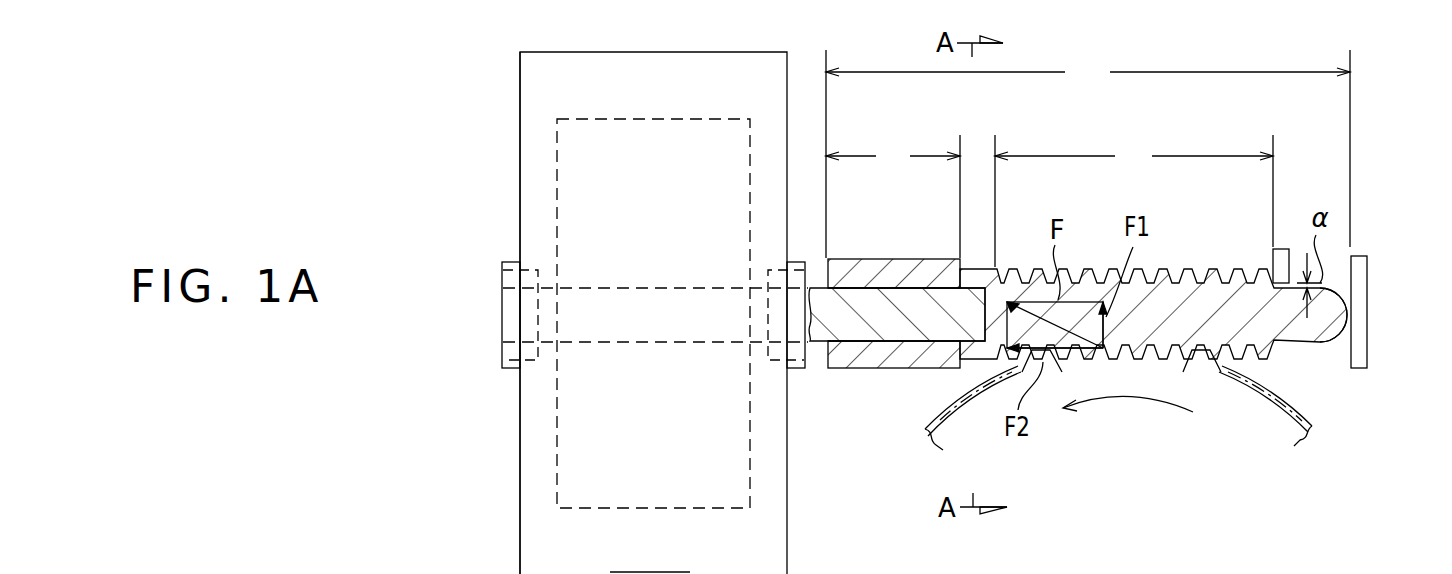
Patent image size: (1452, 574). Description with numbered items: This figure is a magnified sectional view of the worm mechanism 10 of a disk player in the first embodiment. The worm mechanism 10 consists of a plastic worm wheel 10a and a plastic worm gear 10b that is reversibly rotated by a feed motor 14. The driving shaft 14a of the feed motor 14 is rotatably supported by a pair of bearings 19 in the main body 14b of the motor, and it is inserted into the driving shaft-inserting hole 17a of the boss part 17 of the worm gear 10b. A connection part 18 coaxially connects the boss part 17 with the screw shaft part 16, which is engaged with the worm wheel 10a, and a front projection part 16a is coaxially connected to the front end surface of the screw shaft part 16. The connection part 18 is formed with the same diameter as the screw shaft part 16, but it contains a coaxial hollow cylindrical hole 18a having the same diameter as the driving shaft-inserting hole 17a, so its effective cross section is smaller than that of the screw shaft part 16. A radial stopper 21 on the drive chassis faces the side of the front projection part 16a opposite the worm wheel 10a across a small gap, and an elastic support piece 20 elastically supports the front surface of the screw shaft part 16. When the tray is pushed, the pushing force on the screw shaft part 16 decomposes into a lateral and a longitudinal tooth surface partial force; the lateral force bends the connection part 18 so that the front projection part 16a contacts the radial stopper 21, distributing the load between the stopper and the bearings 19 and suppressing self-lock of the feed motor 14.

The worm mechanism 10 is at (1389, 216).
The worm wheel 10a is at (1312, 395).
The worm gear 10b is at (1088, 148).
The feed motor 14 is at (511, 152).
The driving shaft 14a is at (890, 298).
The main body 14b is at (533, 208).
The screw shaft part 16 is at (1134, 201).
The front projection part 16a is at (1297, 335).
The boss part 17 is at (893, 154).
The driving shaft-inserting hole 17a is at (872, 343).
The connection part 18 is at (978, 155).
The hollow cylindrical hole 18a is at (975, 326).
The bearings 19 is at (502, 352).
The elastic support piece 20 is at (1367, 294).
The radial stopper 21 is at (1273, 262).